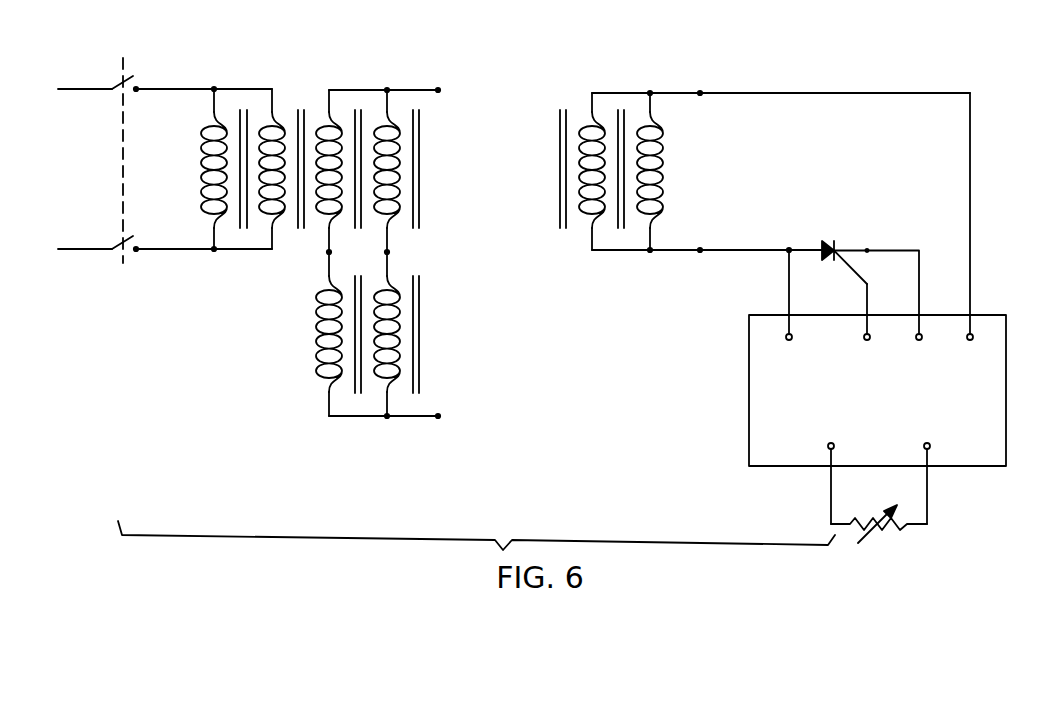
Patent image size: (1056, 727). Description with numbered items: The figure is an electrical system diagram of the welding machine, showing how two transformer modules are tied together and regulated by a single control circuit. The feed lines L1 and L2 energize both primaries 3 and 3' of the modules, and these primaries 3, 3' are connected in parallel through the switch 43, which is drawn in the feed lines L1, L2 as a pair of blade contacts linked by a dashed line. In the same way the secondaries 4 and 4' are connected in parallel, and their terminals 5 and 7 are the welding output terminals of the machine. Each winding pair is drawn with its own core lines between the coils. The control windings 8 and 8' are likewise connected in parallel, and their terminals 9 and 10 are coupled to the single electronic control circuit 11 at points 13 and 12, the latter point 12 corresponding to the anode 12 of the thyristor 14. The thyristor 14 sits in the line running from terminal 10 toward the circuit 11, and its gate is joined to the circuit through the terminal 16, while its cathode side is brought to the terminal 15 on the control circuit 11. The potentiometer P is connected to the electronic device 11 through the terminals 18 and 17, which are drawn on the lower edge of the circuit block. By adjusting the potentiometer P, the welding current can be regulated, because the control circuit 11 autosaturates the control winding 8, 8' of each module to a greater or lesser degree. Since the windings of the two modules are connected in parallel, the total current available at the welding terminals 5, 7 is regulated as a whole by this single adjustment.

The switch 43 is at (123, 147).
The feed line L1 is at (150, 89).
The feed line L2 is at (150, 249).
The primary 3 is at (214, 157).
The primary 3' is at (272, 156).
The secondary 4 is at (331, 322).
The secondary 4' is at (391, 322).
The terminal 5 is at (386, 77).
The terminal 7 is at (386, 404).
The control winding 8 is at (592, 155).
The control winding 8' is at (650, 156).
The terminal 9 is at (781, 78).
The terminal 10 is at (690, 238).
The electronic control circuit 11 is at (892, 390).
The anode 12 is at (798, 298).
The point 13 is at (970, 232).
The thyristor 14 is at (840, 250).
The terminal 15 is at (882, 312).
The terminal 16 is at (865, 310).
The terminal 17 is at (927, 471).
The terminal 18 is at (831, 471).
The potentiometer P is at (879, 531).